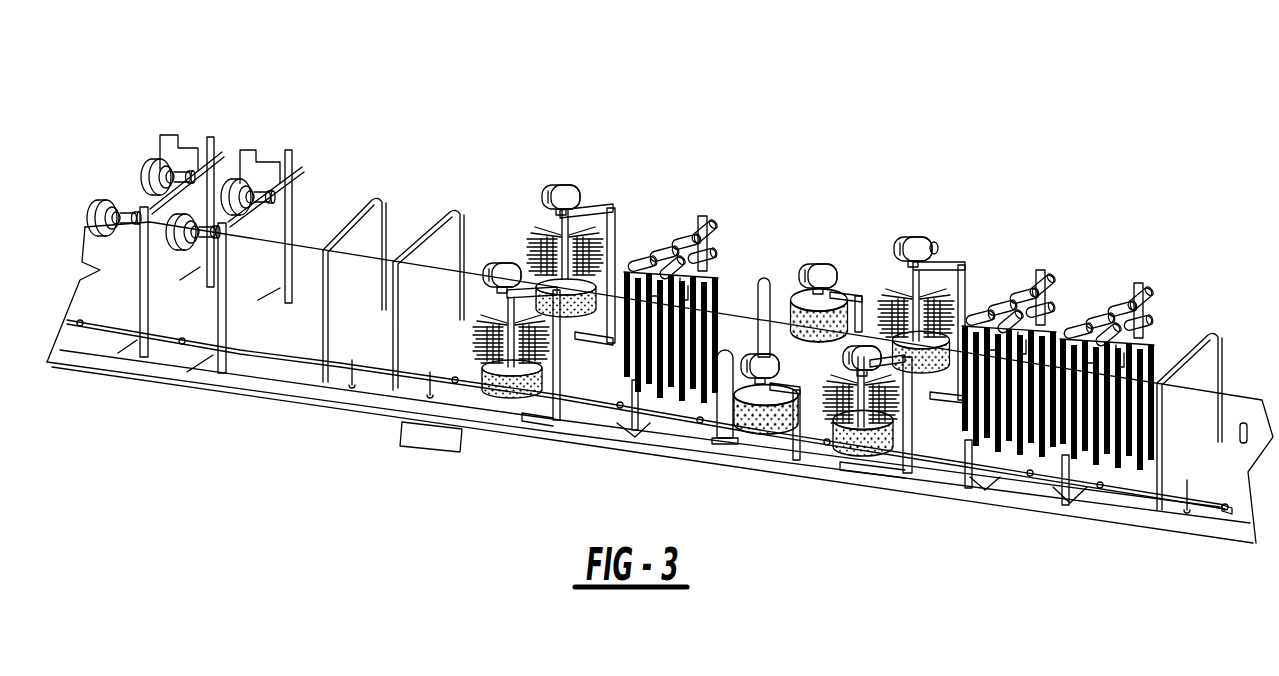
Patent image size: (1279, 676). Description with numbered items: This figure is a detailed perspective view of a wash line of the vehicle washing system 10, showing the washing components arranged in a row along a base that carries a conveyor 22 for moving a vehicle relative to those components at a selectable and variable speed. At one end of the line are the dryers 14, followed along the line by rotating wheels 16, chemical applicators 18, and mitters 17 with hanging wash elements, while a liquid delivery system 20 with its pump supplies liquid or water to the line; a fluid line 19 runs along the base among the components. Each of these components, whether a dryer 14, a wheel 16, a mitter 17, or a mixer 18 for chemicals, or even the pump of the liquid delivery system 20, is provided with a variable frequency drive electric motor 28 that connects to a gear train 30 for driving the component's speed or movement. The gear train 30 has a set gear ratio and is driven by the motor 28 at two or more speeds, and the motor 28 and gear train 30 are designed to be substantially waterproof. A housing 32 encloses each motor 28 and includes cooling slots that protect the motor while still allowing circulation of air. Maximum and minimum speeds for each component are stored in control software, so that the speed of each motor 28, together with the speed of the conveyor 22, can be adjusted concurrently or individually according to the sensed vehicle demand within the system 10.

The vehicle washing system 10 is at (426, 66).
The dryer 14 is at (122, 212).
The wheel 16 is at (540, 238).
The mitter 17 is at (713, 267).
The chemical applicator 18 is at (827, 256).
The fluid supply pipe 19 is at (173, 335).
The liquid delivery system 20 is at (1227, 352).
The conveyor 22 is at (1232, 512).
The variable frequency drive electric motor 28 is at (915, 238).
The gear train 30 is at (945, 246).
The housing 32 is at (502, 238).